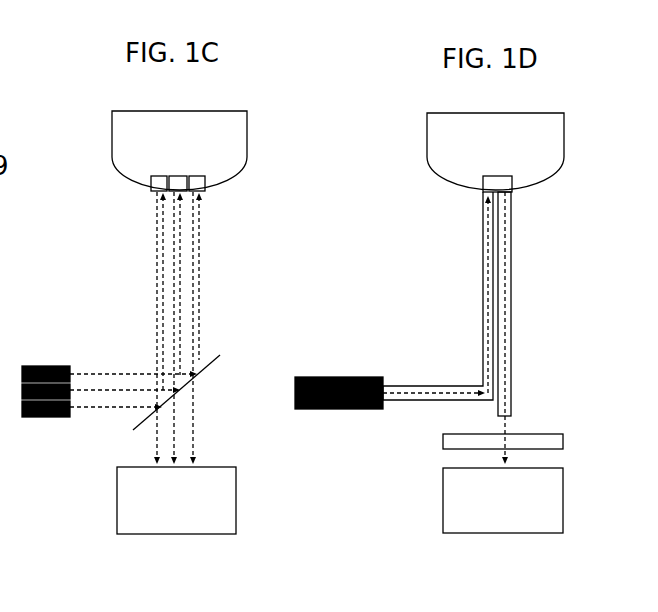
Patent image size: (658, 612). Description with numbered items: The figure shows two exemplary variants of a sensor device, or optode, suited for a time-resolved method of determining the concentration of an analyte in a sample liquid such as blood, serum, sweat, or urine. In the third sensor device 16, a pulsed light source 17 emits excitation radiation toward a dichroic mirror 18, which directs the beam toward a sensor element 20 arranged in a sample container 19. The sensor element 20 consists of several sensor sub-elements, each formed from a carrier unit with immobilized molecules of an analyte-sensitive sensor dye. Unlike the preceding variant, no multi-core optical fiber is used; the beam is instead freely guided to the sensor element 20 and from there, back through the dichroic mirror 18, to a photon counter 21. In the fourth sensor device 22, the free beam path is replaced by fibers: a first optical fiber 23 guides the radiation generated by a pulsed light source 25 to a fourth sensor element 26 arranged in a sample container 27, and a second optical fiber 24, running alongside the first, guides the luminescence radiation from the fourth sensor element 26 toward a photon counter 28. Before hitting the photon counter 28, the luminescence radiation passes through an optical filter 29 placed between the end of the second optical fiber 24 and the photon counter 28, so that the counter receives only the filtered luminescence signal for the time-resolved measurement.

In FIG. 1C, the third sensor device 16 is at (266, 199).
In FIG. 1C, the pulsed light source 17 is at (46, 368).
In FIG. 1C, the dichroic mirror 18 is at (212, 375).
In FIG. 1C, the sample container 19 is at (140, 158).
In FIG. 1C, the sensor element 20 is at (197, 184).
In FIG. 1C, the photon counter 21 is at (172, 527).
In FIG. 1D, the fourth sensor device 22 is at (577, 199).
In FIG. 1D, the first optical fiber 23 is at (483, 248).
In FIG. 1D, the second optical fiber 24 is at (513, 320).
In FIG. 1D, the pulsed light source 25 is at (336, 378).
In FIG. 1D, the fourth sensor element 26 is at (503, 182).
In FIG. 1D, the sample container 27 is at (448, 168).
In FIG. 1D, the photon counter 28 is at (545, 508).
In FIG. 1D, the optical filter 29 is at (561, 442).